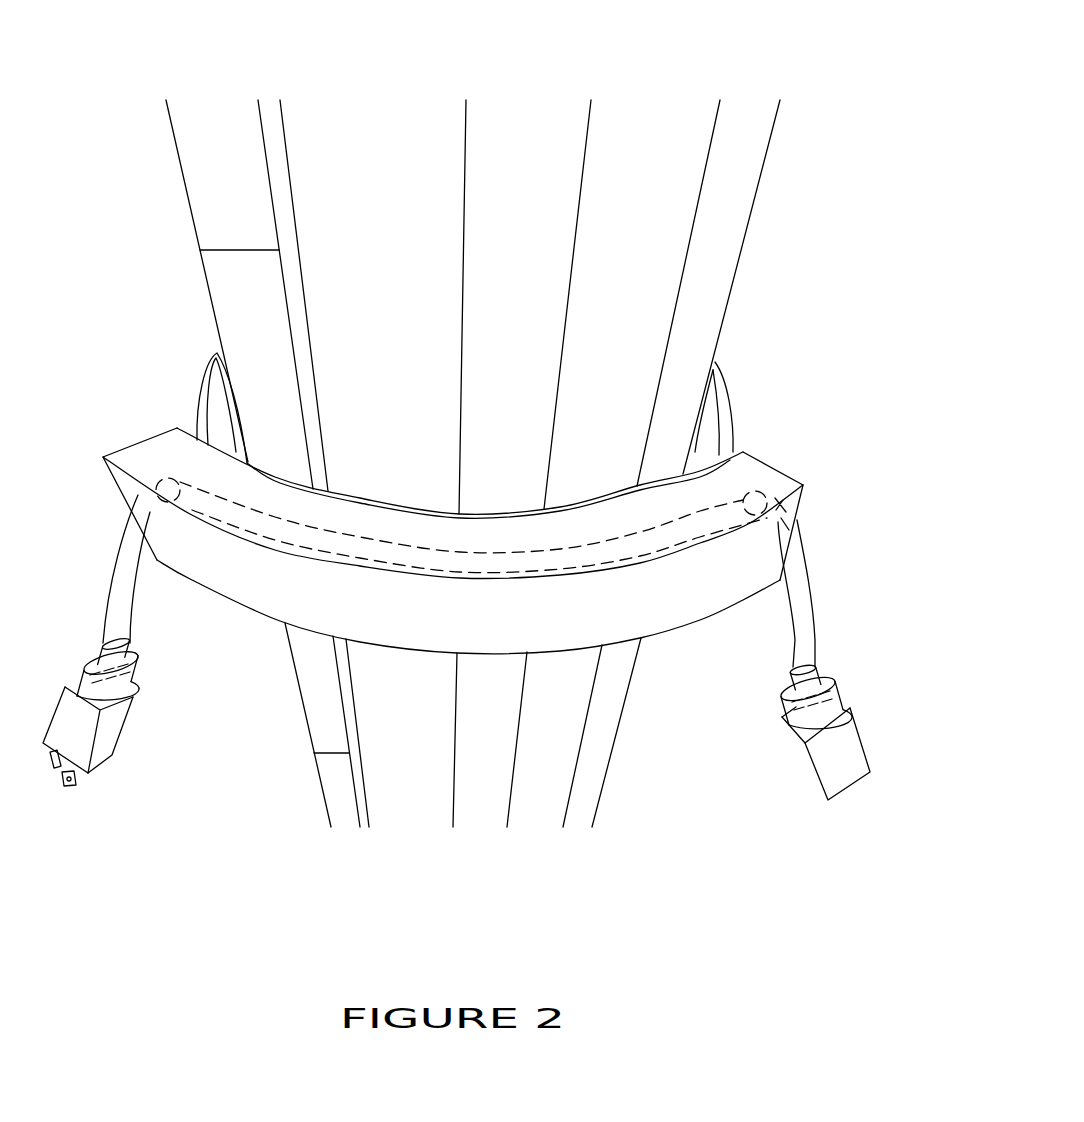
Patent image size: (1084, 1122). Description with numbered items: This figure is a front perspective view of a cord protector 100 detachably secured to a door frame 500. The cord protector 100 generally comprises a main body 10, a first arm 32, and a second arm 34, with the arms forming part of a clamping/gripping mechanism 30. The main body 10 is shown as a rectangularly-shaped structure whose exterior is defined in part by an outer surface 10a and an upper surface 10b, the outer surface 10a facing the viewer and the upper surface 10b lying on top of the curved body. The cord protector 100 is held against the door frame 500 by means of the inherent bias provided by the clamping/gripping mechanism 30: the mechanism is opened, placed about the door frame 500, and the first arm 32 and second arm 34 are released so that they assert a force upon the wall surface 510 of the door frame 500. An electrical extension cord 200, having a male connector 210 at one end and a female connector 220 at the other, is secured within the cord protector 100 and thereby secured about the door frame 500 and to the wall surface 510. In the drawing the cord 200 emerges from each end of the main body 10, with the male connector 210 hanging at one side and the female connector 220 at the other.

The door frame 500 is at (473, 417).
The wall surface 510 is at (247, 192).
The cord protector 100 is at (502, 574).
The main body 10 is at (503, 510).
The outer surface 10a is at (510, 628).
The upper surface 10b is at (187, 468).
The clamping/gripping mechanism 30 is at (463, 512).
The first arm 32 is at (727, 375).
The second arm 34 is at (203, 376).
The electrical extension cord 200 is at (502, 697).
The male connector 210 is at (110, 733).
The female connector 220 is at (805, 760).